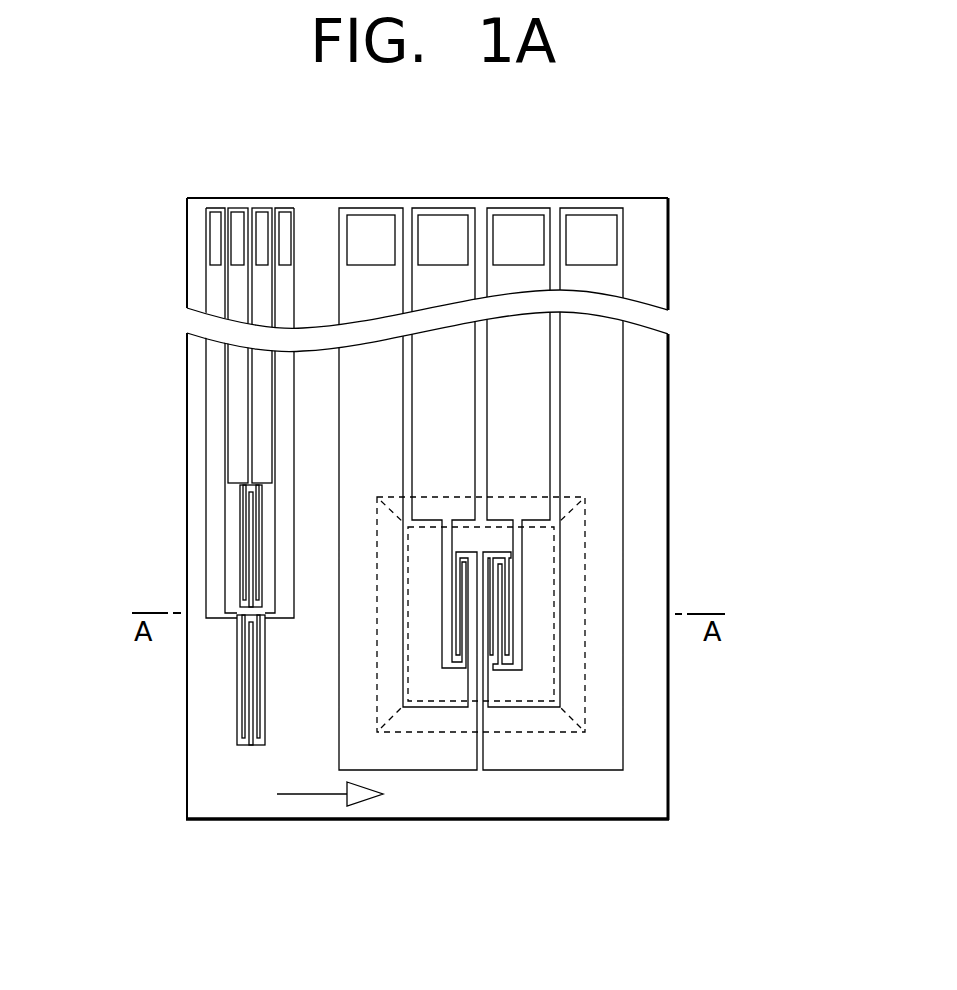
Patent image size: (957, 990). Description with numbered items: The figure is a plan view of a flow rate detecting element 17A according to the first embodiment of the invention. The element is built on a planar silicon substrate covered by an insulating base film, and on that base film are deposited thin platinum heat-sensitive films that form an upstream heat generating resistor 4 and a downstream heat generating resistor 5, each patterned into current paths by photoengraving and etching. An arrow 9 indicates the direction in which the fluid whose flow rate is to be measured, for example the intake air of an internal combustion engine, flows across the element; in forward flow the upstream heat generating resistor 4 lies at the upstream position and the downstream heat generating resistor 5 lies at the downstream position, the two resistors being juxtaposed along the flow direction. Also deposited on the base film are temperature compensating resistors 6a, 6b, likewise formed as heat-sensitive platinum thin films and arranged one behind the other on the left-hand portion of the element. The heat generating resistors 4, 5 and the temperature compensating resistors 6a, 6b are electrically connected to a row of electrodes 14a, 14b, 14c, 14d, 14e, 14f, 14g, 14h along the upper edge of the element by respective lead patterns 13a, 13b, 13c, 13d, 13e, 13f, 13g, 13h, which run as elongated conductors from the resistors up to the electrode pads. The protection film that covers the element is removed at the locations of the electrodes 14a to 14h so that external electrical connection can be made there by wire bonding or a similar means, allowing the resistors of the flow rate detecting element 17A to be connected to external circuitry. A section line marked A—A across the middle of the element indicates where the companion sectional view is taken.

The upstream heat generating resistor 4 is at (443, 657).
The downstream heat generating resistor 5 is at (515, 660).
The temperature compensating resistor 6a is at (245, 537).
The temperature compensating resistor 6b is at (238, 697).
The arrow 9 is at (292, 793).
The lead pattern 13a is at (217, 407).
The lead pattern 13b is at (238, 421).
The lead pattern 13c is at (263, 433).
The lead pattern 13d is at (288, 445).
The lead pattern 13e is at (370, 477).
The lead pattern 13f is at (693, 390).
The lead pattern 13g is at (693, 383).
The lead pattern 13h is at (693, 378).
The electrode 14a is at (214, 222).
The electrode 14b is at (237, 222).
The electrode 14c is at (263, 222).
The electrode 14d is at (285, 222).
The electrode 14e is at (377, 222).
The electrode 14f is at (450, 222).
The electrode 14g is at (527, 222).
The electrode 14h is at (598, 222).
The flow rate detecting element 17A is at (187, 873).